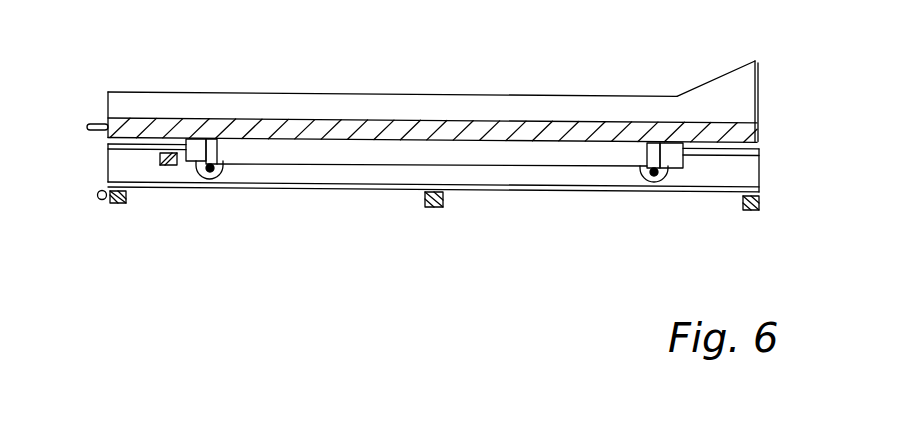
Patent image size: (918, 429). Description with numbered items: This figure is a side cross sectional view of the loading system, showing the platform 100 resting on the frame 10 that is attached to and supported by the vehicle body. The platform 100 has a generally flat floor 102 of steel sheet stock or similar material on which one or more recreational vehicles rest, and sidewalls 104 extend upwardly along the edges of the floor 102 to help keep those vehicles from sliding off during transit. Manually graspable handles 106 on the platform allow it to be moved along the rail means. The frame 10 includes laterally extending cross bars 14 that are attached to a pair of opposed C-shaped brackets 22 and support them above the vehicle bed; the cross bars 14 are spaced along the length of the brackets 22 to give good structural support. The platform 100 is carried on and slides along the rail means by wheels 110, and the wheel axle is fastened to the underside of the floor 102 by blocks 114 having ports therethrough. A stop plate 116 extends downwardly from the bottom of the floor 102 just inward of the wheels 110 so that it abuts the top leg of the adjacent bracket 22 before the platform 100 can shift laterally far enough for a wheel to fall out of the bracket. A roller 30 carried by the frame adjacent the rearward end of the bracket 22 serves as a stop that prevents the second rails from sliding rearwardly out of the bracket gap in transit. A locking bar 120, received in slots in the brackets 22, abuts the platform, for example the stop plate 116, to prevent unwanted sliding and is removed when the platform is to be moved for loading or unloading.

The frame 10 is at (100, 146).
The cross bars 14 is at (115, 204).
The C-shaped brackets 22 is at (747, 171).
The roller 30 is at (99, 191).
The platform 100 is at (229, 90).
The floor 102 is at (453, 120).
The sidewalls 104 is at (627, 102).
The handles 106 is at (100, 122).
The wheels 110 is at (208, 180).
The blocks 114 is at (218, 151).
The stop plate 116 is at (410, 162).
The locking bar 120 is at (167, 158).